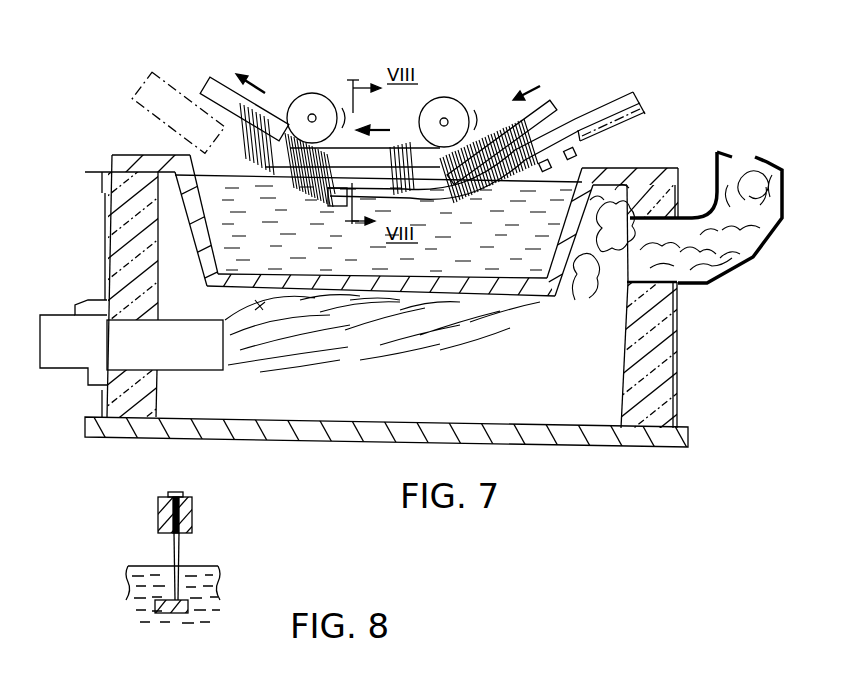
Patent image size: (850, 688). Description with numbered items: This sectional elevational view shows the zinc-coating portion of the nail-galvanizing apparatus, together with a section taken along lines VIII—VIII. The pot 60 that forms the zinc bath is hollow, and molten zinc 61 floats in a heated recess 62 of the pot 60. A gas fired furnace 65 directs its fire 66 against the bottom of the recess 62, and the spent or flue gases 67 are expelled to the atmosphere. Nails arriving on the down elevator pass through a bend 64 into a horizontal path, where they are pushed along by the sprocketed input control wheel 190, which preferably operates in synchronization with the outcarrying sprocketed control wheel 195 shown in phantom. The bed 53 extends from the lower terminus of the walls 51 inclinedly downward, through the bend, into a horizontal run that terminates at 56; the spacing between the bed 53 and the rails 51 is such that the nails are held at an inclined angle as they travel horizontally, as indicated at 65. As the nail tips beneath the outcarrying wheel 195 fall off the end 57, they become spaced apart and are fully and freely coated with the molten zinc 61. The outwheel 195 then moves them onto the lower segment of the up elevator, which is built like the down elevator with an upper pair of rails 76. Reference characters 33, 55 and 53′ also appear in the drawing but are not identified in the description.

In FIG. 7, the pot 60 is at (696, 339).
In FIG. 7, the molten zinc 61 is at (486, 265).
In FIG. 8, the molten zinc 61 is at (208, 586).
In FIG. 7, the heated recess 62 is at (563, 282).
In FIG. 7, the bend 64 is at (490, 186).
In FIG. 7, the gas fired furnace 65 is at (168, 352).
In FIG. 7, the fire 66 is at (337, 355).
In FIG. 7, the spent or flue gases 67 is at (740, 205).
In FIG. 7, the bed 53 is at (357, 190).
In FIG. 8, the strip end section 53′ is at (183, 594).
In FIG. 7, the direction arrow 55 is at (524, 91).
In FIG. 7, the terminus of bed 56 is at (552, 102).
In FIG. 8, the terminus of bed 56 is at (158, 513).
In FIG. 7, the end 57 is at (327, 206).
In FIG. 7, the rails 51 is at (639, 100).
In FIG. 7, the upper pair of rails 76 is at (241, 70).
In FIG. 7, the sprocketed input control wheel 190 is at (443, 97).
In FIG. 7, the outcarrying sprocketed control wheel 195 is at (313, 93).
In FIG. 8, the pin 33 is at (176, 494).